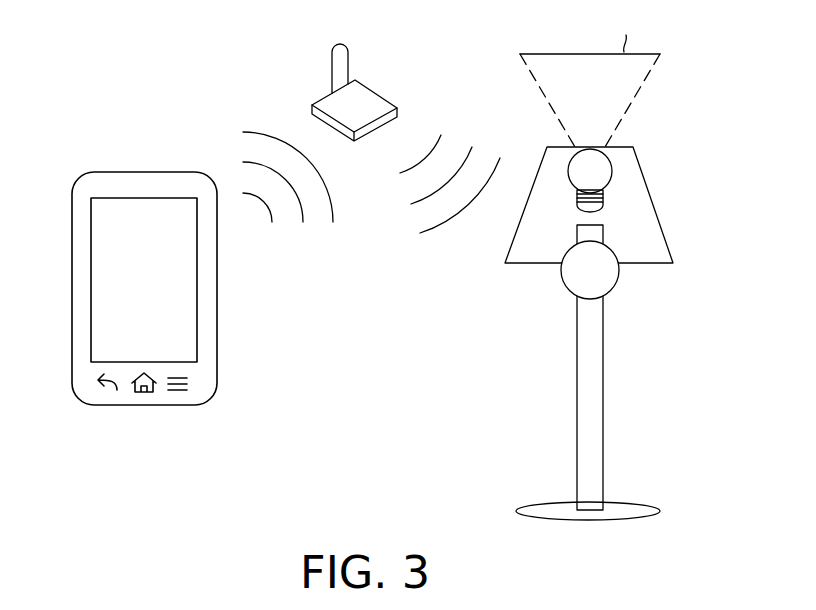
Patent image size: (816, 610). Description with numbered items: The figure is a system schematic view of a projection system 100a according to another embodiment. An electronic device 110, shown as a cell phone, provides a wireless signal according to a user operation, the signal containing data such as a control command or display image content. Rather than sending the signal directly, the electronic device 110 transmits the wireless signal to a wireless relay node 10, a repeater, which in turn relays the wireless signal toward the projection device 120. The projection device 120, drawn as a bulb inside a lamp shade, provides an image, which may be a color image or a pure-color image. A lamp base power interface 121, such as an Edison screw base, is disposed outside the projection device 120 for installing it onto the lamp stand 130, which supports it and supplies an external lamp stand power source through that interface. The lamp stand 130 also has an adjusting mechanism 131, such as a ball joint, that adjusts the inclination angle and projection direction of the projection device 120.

The projection system 100a is at (112, 523).
The wireless relay node 10 is at (372, 97).
The electronic device 110 is at (158, 172).
The projection device 120 is at (646, 188).
The lamp base power interface 121 is at (605, 197).
The lamp stand 130 is at (615, 333).
The adjusting mechanism 131 is at (605, 275).